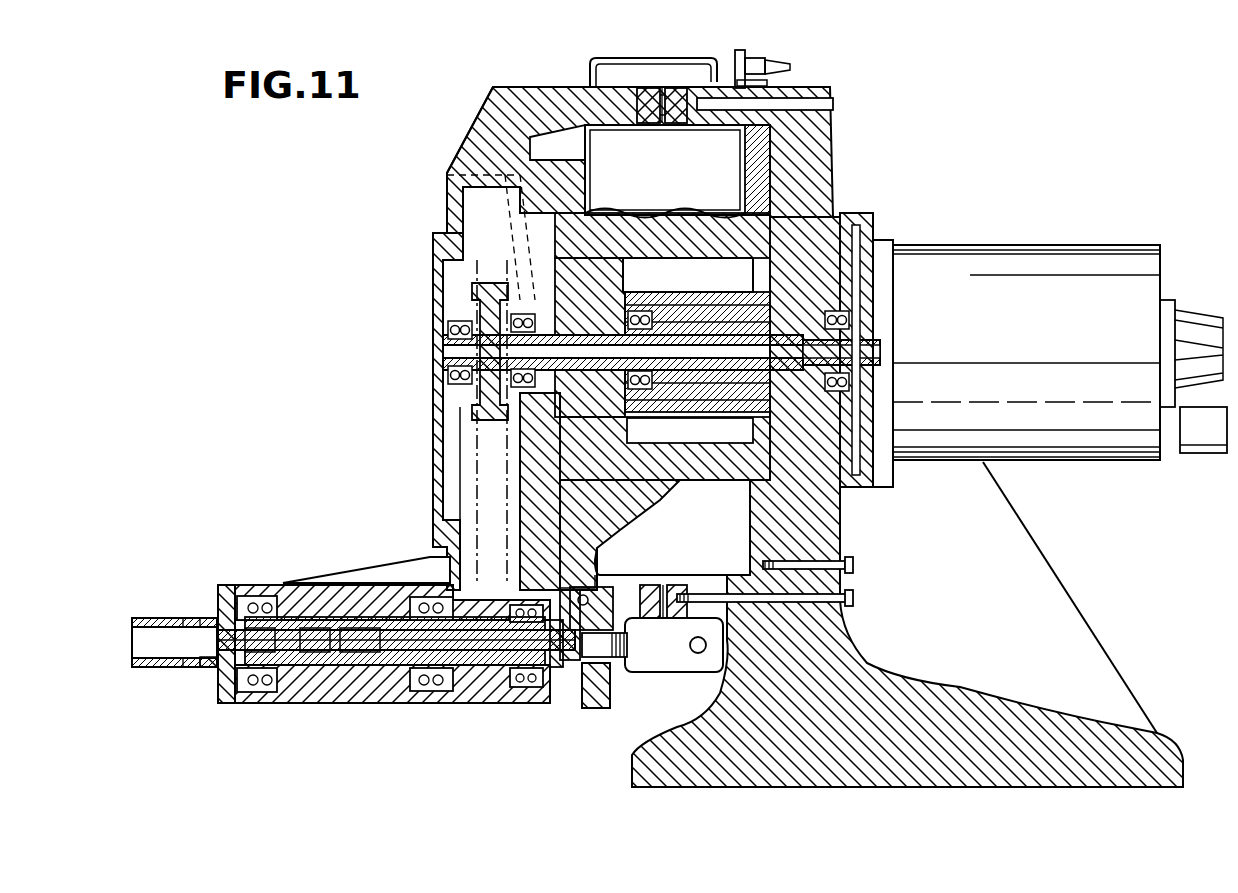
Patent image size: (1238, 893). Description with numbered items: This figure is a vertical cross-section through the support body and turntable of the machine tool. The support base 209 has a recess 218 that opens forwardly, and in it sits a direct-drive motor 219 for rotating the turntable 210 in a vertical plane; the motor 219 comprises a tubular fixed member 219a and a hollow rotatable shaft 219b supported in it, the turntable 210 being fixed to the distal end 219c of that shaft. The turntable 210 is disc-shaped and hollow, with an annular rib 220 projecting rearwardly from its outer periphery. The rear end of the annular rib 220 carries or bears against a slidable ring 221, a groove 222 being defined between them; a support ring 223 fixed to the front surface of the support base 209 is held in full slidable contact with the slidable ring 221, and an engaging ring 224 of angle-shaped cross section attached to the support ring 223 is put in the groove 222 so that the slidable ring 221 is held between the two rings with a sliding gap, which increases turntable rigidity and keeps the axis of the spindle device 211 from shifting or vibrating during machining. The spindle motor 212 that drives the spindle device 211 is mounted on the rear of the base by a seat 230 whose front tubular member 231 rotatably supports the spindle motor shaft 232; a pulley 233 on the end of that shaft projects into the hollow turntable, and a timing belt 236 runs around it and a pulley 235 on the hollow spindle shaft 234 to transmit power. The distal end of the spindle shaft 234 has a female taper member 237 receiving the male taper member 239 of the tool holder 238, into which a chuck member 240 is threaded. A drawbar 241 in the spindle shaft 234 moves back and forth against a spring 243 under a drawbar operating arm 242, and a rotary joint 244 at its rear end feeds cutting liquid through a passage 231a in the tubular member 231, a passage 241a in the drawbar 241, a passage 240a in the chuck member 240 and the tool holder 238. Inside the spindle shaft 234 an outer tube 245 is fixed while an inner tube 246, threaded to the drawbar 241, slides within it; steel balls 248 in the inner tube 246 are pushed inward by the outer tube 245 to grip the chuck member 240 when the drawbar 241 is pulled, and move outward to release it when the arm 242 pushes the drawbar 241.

The support base 209 is at (823, 140).
The turntable 210 is at (450, 193).
The spindle device 211 is at (355, 587).
The spindle motor 212 is at (1032, 262).
The recess 218 is at (767, 173).
The direct-drive motor 219 is at (740, 158).
The tubular fixed member 219a is at (587, 103).
The hollow rotatable shaft 219b is at (713, 467).
The distal end of the hollow rotatable shaft 219c is at (613, 515).
The annular rib 220 is at (563, 93).
The slidable ring 221 is at (640, 140).
The groove 222 is at (600, 123).
The support ring 223 is at (660, 107).
The engaging ring 224 is at (597, 78).
The seat 230 is at (857, 227).
The front tubular member 231 is at (840, 340).
The passage 231a is at (840, 288).
The spindle motor shaft 232 is at (633, 297).
The pulley 233 is at (460, 420).
The hollow spindle shaft 234 is at (405, 663).
The pulley 235 is at (497, 693).
The timing belt 236 is at (485, 473).
The female taper member 237 is at (230, 583).
The tool holder 238 is at (162, 618).
The male taper member 239 is at (212, 667).
The chuck member 240 is at (253, 687).
The passage 240a is at (255, 617).
The drawbar 241 is at (383, 653).
The passage 241a is at (560, 667).
The drawbar operating arm 242 is at (597, 707).
The spring 243 is at (360, 653).
The rotary joint 244 is at (703, 630).
The outer tube 245 is at (320, 630).
The inner tube 246 is at (312, 663).
The steel balls 248 is at (257, 653).